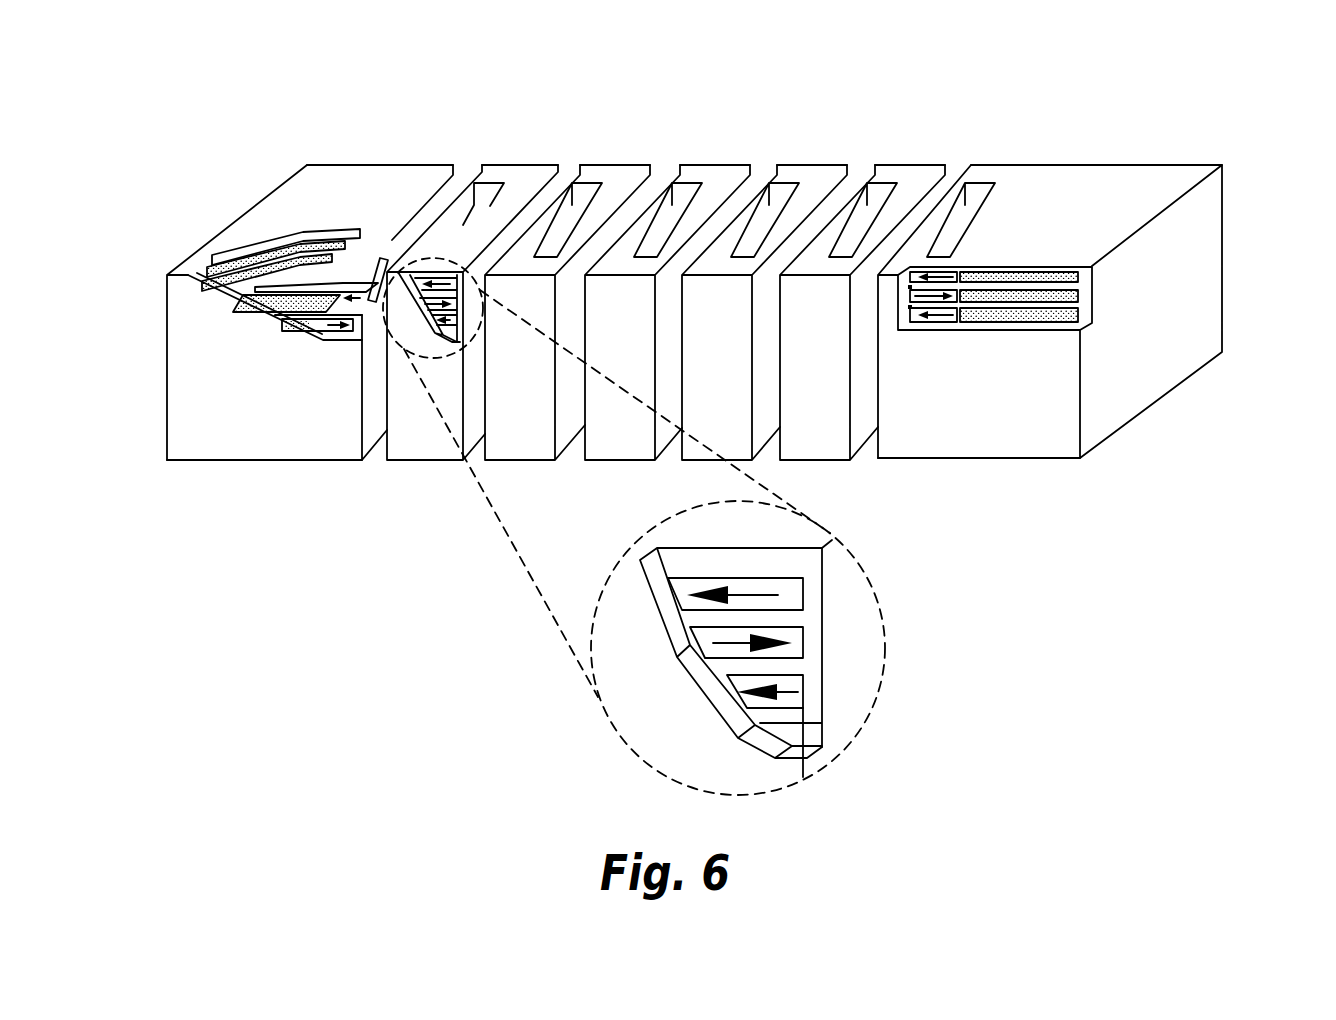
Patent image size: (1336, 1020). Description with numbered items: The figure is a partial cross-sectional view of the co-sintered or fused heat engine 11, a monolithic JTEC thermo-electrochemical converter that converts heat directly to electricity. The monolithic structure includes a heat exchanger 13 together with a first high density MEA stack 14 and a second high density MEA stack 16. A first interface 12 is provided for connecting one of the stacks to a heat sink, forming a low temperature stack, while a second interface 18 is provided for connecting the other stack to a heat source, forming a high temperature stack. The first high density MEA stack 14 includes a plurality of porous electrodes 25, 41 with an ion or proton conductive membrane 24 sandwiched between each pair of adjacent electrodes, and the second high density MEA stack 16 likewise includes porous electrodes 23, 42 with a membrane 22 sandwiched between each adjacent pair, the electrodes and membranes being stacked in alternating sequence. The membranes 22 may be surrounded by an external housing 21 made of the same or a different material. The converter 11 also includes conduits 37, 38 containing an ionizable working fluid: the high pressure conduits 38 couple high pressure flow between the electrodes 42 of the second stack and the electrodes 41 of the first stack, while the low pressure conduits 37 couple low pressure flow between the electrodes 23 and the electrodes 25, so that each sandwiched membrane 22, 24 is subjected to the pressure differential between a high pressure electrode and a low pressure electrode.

The heat engine 11 is at (702, 419).
The first interface 12 is at (172, 290).
The heat exchanger 13 is at (765, 135).
The first high density MEA stack 14 is at (1015, 462).
The second high density MEA stack 16 is at (195, 462).
The second interface 18 is at (1041, 347).
The external housing 21 is at (366, 182).
The membrane 22 is at (330, 300).
The porous electrode 23 is at (290, 330).
The membrane 24 is at (910, 307).
The porous electrode 25 is at (1033, 307).
The low pressure conduit 37 is at (445, 286).
The high pressure conduit 38 is at (384, 310).
The porous electrode 41 is at (1062, 300).
The porous electrode 42 is at (275, 310).